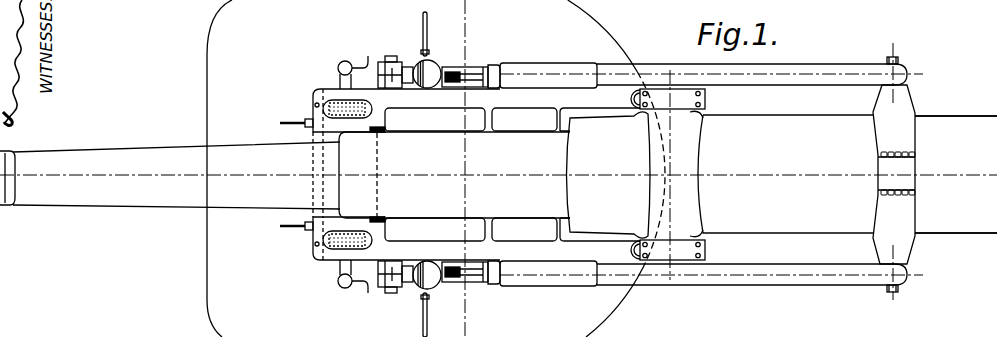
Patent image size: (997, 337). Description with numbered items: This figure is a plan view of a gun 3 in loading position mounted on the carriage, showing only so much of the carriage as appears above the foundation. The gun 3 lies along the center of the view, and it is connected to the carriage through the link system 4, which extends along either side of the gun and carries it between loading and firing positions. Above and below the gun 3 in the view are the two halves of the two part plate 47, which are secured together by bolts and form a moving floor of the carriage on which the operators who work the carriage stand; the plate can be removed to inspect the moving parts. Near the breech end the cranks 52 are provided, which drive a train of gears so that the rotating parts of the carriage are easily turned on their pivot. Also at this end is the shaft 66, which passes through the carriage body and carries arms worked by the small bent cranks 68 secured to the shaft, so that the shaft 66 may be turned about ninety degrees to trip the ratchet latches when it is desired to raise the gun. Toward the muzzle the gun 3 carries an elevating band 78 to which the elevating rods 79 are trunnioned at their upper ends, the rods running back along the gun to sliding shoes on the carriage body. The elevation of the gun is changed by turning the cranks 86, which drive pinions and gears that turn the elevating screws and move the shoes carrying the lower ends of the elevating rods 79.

The gun 3 is at (956, 174).
The link system 4 is at (512, 174).
The two part plate 47 is at (548, 168).
The cranks 52 is at (302, 232).
The shaft 66 is at (337, 274).
The small bent cranks 68 is at (366, 296).
The elevating band 78 is at (894, 174).
The elevating rods 79 is at (773, 283).
The cranks 86 is at (437, 319).